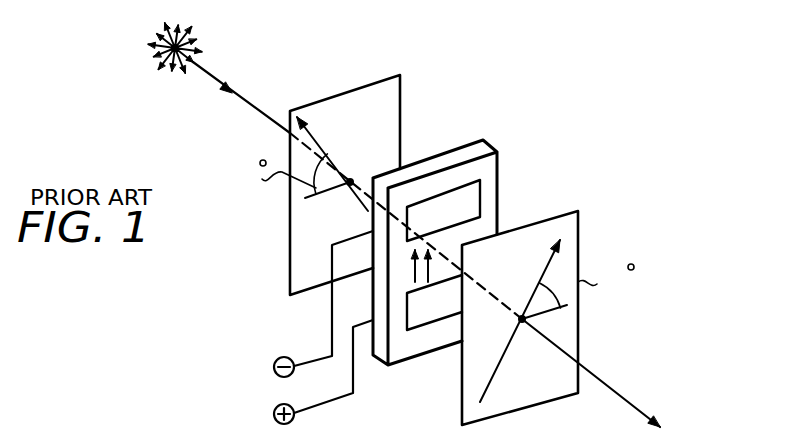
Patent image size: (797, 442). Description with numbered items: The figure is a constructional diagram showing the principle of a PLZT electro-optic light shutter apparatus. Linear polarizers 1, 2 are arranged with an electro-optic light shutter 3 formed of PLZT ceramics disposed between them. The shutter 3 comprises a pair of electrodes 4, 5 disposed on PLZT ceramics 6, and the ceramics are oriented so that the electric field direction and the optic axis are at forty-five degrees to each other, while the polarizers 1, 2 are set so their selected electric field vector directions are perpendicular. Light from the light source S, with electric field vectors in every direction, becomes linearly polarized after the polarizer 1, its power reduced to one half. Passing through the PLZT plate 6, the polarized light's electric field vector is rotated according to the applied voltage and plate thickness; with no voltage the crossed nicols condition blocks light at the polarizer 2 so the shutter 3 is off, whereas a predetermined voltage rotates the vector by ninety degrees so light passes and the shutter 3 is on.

The linear polarizer 1 is at (347, 97).
The linear polarizer 2 is at (572, 228).
The electro-optic light shutter 3 is at (423, 273).
The electrode 4 is at (472, 198).
The electrode 5 is at (428, 316).
The PLZT ceramics 6 is at (488, 217).
The light source S is at (165, 70).